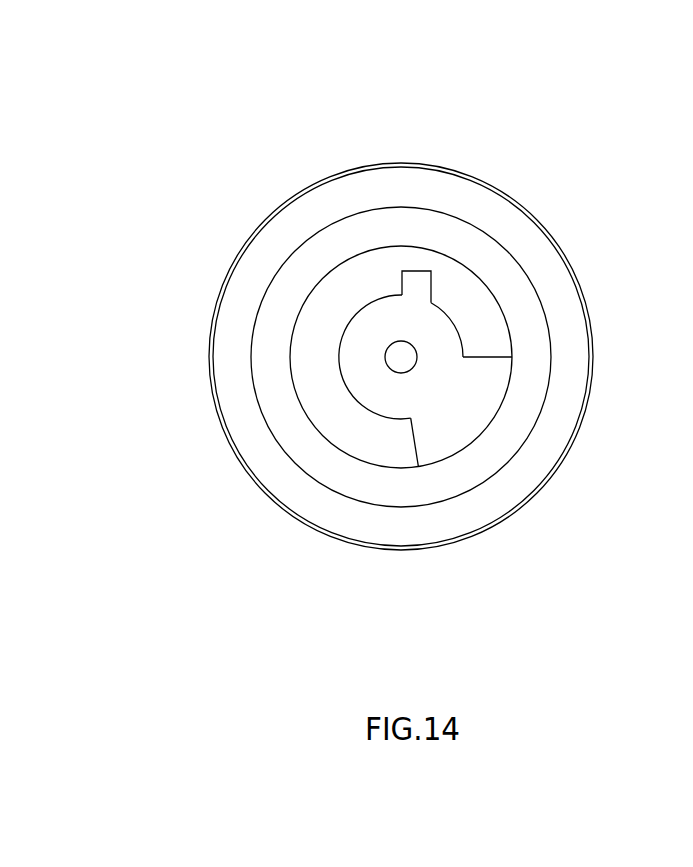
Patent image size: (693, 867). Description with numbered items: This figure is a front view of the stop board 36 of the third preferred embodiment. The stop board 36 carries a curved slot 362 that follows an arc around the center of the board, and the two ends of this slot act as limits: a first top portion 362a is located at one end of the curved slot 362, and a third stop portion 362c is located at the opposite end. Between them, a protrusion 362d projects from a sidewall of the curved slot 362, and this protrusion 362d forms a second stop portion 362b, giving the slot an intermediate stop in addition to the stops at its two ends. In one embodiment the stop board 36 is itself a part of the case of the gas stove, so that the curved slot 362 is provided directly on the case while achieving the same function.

The stop board 36 is at (576, 133).
The curved slot 362 is at (336, 293).
The first top portion 362a is at (488, 357).
The second stop portion 362b is at (402, 287).
The third stop portion 362c is at (416, 439).
The protrusion 362d is at (418, 285).